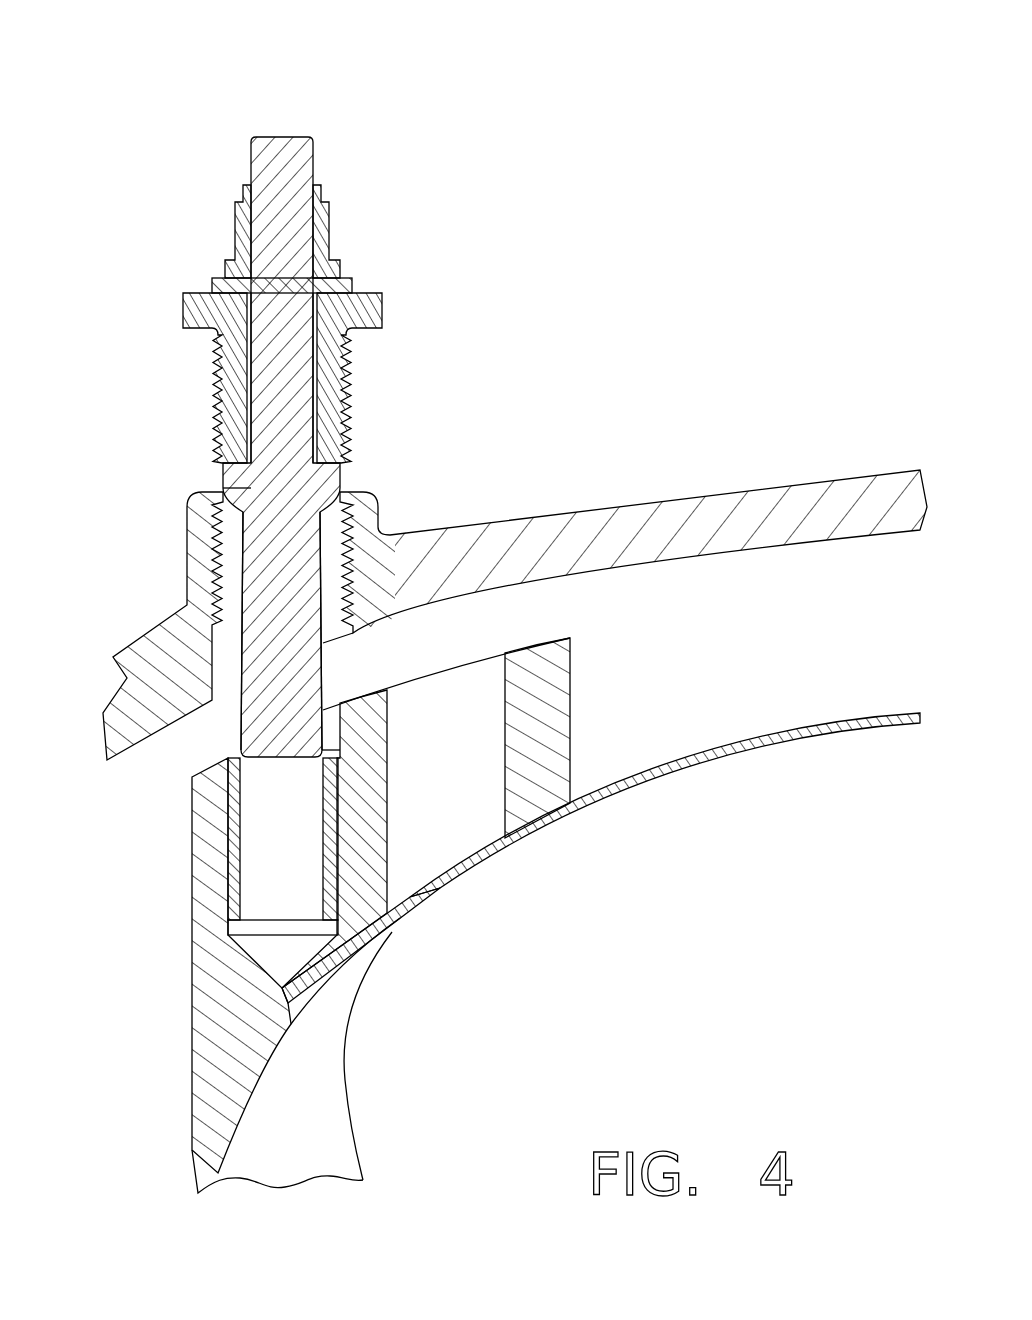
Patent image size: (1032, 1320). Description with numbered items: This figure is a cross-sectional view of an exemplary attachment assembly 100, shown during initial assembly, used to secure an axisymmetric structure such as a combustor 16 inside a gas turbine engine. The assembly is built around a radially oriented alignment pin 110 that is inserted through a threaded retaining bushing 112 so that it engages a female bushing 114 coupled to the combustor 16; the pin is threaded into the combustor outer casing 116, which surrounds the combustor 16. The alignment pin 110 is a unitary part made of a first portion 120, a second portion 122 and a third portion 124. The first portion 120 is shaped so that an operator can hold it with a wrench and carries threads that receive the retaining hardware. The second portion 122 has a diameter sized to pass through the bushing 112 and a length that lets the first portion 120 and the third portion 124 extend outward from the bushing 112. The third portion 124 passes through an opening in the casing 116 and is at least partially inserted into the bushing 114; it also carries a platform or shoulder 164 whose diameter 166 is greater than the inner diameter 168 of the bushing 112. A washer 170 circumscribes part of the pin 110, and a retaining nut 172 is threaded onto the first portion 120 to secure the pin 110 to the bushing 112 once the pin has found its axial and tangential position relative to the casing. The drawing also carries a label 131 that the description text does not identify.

The attachment assembly 100 is at (703, 222).
The alignment pin 110 is at (345, 447).
The threaded bushing 112 is at (360, 312).
The female bushing 114 is at (233, 847).
The combustor outer casing 116 is at (158, 640).
The first portion 120 is at (271, 231).
The second portion 122 is at (290, 357).
The third portion 124 is at (303, 672).
The gap 131 is at (400, 567).
The shoulder 164 is at (205, 492).
The diameter 166 is at (422, 477).
The inner diameter 168 is at (190, 80).
The washer 170 is at (343, 267).
The retaining nut 172 is at (235, 222).
The combustor 16 is at (547, 812).